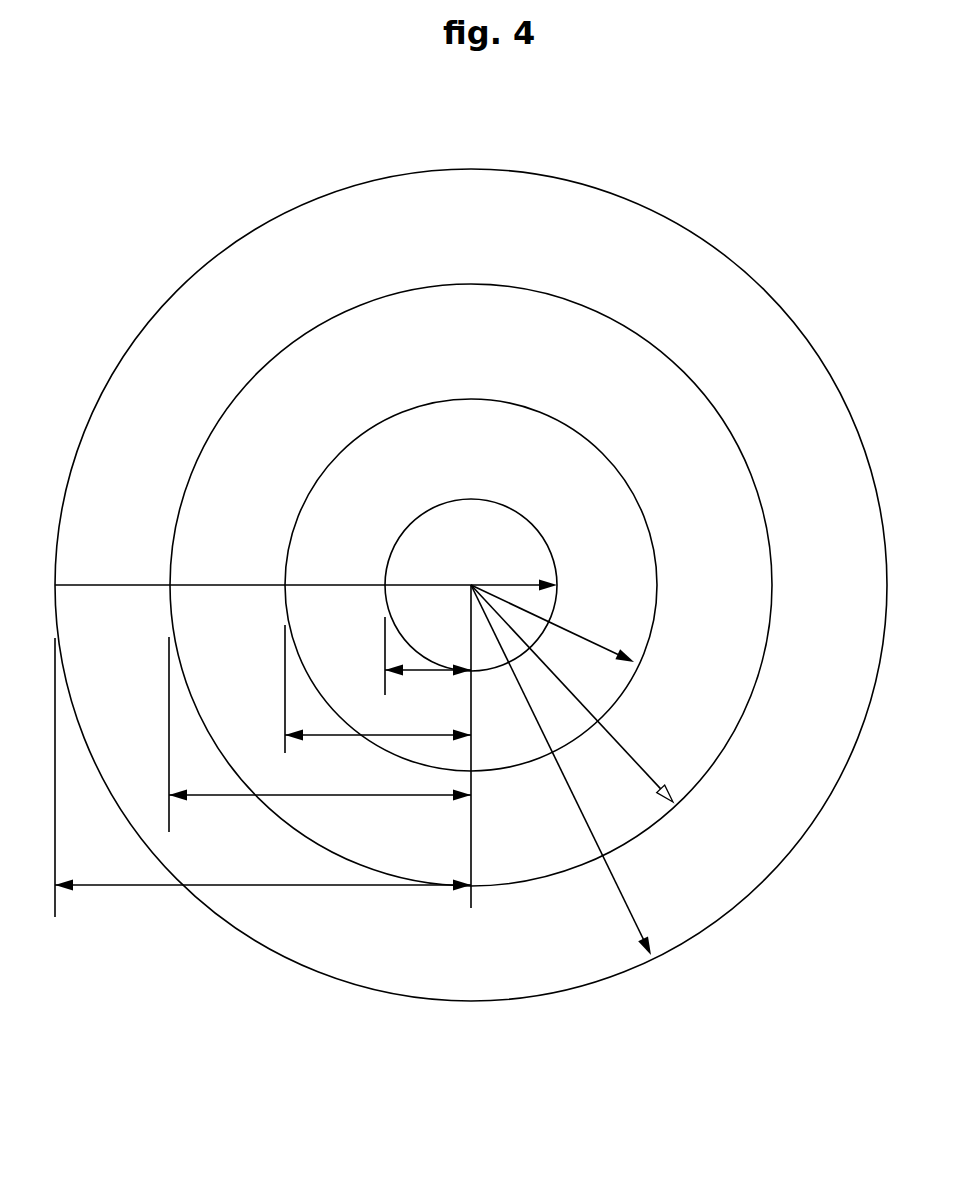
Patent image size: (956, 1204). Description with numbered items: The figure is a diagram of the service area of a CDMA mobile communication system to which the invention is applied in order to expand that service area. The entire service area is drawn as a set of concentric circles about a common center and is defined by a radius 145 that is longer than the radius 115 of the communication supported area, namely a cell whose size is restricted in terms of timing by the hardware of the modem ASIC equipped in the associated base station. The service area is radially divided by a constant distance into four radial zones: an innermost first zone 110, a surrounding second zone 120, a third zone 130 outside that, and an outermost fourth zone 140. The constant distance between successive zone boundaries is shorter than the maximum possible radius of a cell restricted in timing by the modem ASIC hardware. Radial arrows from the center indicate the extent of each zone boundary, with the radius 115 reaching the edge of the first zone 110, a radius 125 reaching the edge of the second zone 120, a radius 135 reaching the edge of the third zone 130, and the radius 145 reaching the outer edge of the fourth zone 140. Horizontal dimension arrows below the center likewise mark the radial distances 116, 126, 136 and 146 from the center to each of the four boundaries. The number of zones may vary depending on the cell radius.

The first zone 110 is at (483, 538).
The radius of communication supported area 115 is at (509, 580).
The radial distance of first region 116 is at (423, 672).
The second zone 120 is at (483, 465).
The radius of second region 125 is at (576, 632).
The radial distance of second region 126 is at (332, 737).
The third zone 130 is at (483, 355).
The radius of third region 135 is at (625, 748).
The radial distance of third region 136 is at (220, 797).
The fourth zone 140 is at (483, 237).
The radius of entire service area 145 is at (628, 906).
The radial distance of fourth region 146 is at (108, 886).